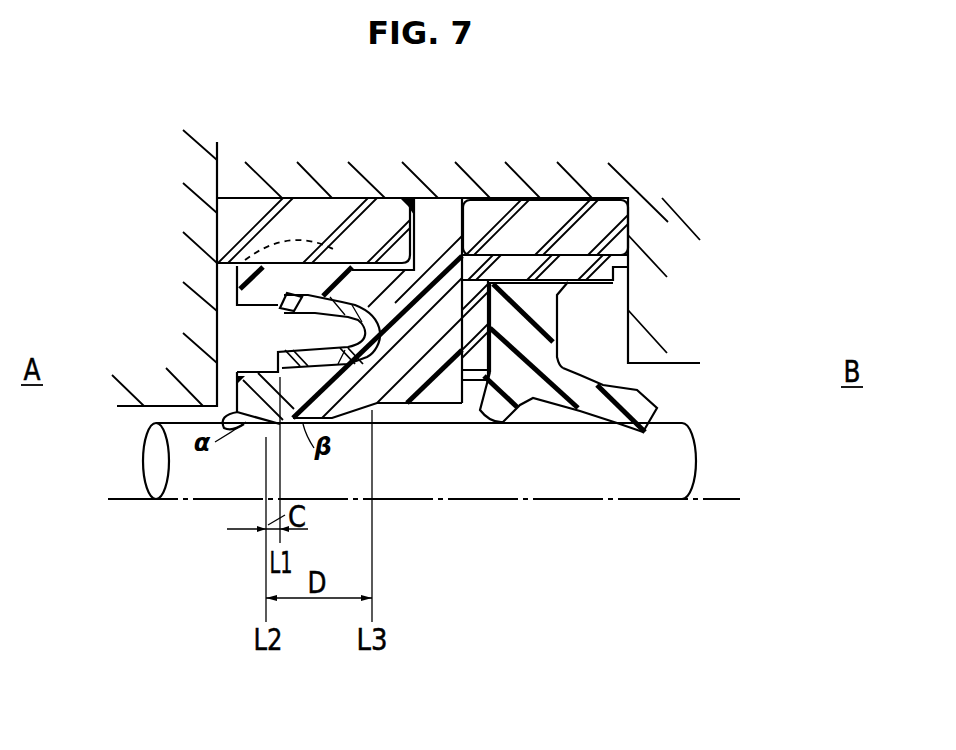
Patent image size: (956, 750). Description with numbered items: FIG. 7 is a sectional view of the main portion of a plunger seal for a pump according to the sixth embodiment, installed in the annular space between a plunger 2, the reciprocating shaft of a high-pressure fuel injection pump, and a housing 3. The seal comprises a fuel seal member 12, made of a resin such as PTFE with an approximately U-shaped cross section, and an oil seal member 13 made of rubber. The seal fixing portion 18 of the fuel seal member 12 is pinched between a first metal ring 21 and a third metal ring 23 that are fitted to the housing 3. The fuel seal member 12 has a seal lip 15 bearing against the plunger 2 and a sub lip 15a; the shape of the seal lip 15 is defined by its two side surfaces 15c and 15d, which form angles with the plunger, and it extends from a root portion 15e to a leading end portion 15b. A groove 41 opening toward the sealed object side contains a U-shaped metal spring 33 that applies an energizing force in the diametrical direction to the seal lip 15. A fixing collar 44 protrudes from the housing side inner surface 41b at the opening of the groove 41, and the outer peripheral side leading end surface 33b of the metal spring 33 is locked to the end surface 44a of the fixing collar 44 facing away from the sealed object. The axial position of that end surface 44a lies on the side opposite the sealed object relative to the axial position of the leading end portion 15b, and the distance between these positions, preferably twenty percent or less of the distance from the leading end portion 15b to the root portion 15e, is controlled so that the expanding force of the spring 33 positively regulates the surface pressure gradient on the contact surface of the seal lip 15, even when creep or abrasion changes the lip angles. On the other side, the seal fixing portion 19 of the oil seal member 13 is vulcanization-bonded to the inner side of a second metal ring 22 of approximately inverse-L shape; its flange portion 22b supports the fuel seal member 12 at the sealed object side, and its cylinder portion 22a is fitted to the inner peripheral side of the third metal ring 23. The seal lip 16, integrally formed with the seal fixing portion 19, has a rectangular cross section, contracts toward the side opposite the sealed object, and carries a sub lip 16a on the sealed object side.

The plunger 2 is at (631, 474).
The housing 3 is at (608, 183).
The fuel seal member 12 is at (240, 283).
The oil seal member 13 is at (563, 315).
The seal lip 15 is at (262, 428).
The sub lip 15a is at (338, 418).
The leading end portion 15b is at (273, 428).
The side surface 15c is at (237, 412).
The side surface 15d is at (283, 430).
The root portion 15e is at (388, 423).
The seal lip 16 is at (655, 411).
The sub lip 16a is at (505, 422).
The seal fixing portion 18 is at (443, 242).
The seal fixing portion 19 is at (533, 300).
The first metal ring 21 is at (363, 222).
The second metal ring 22 is at (533, 260).
The cylinder portion 22a is at (595, 267).
The flange portion 22b is at (478, 338).
The third metal ring 23 is at (585, 223).
The U-shaped metal spring 33 is at (350, 296).
The outer peripheral side leading end surface 33b is at (255, 266).
The groove 41 is at (245, 345).
The housing side inner surface 41b is at (314, 292).
The fixing collar 44 is at (242, 290).
The end surface 44a is at (282, 306).